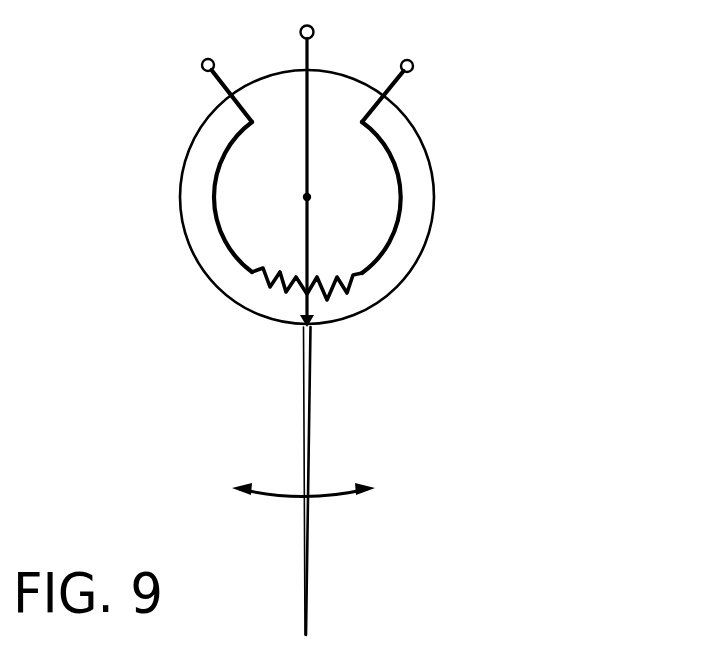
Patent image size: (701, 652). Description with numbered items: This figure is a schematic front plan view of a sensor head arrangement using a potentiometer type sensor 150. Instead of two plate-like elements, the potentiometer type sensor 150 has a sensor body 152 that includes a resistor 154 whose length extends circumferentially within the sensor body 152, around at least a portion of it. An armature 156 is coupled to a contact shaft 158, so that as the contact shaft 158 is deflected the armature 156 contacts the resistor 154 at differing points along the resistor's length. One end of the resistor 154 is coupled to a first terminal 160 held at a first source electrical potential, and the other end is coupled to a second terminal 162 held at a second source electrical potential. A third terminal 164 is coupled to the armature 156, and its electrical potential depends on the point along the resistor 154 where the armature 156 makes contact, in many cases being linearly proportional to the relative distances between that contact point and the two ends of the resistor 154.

The potentiometer type sensor 150 is at (513, 119).
The sensor body 152 is at (420, 216).
The resistor 154 is at (363, 277).
The armature 156 is at (307, 255).
The contact shaft 158 is at (310, 437).
The first terminal 160 is at (215, 82).
The second terminal 162 is at (400, 84).
The third terminal 164 is at (308, 55).